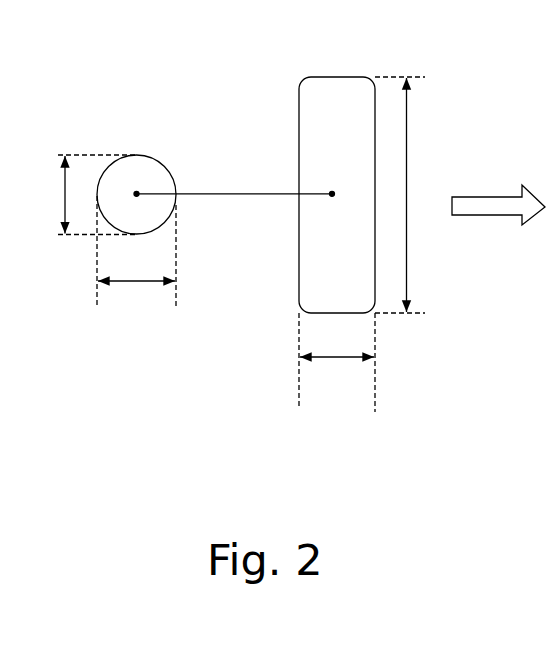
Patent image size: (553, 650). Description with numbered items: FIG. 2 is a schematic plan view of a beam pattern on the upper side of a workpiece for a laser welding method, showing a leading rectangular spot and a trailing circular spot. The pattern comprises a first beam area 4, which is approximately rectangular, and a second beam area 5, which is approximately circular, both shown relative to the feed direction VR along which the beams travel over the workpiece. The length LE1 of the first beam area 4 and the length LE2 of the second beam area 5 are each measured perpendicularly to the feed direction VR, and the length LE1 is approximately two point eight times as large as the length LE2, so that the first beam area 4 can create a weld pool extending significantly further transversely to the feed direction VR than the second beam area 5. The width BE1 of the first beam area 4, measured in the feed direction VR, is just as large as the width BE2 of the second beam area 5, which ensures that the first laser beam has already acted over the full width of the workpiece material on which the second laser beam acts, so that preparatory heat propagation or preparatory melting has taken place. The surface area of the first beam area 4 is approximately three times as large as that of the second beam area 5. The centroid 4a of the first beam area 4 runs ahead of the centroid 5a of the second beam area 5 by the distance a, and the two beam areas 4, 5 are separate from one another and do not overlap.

The first beam area 4 is at (308, 132).
The centroid of the first beam area 4a is at (332, 191).
The second beam area 5 is at (155, 170).
The centroid of the second beam area 5a is at (137, 191).
The distance a is at (267, 197).
The length of the first beam area LE1 is at (409, 195).
The width of the first beam area BE1 is at (337, 362).
The length of the second beam area LE2 is at (82, 195).
The width of the second beam area BE2 is at (136, 253).
The feed direction VR is at (503, 197).